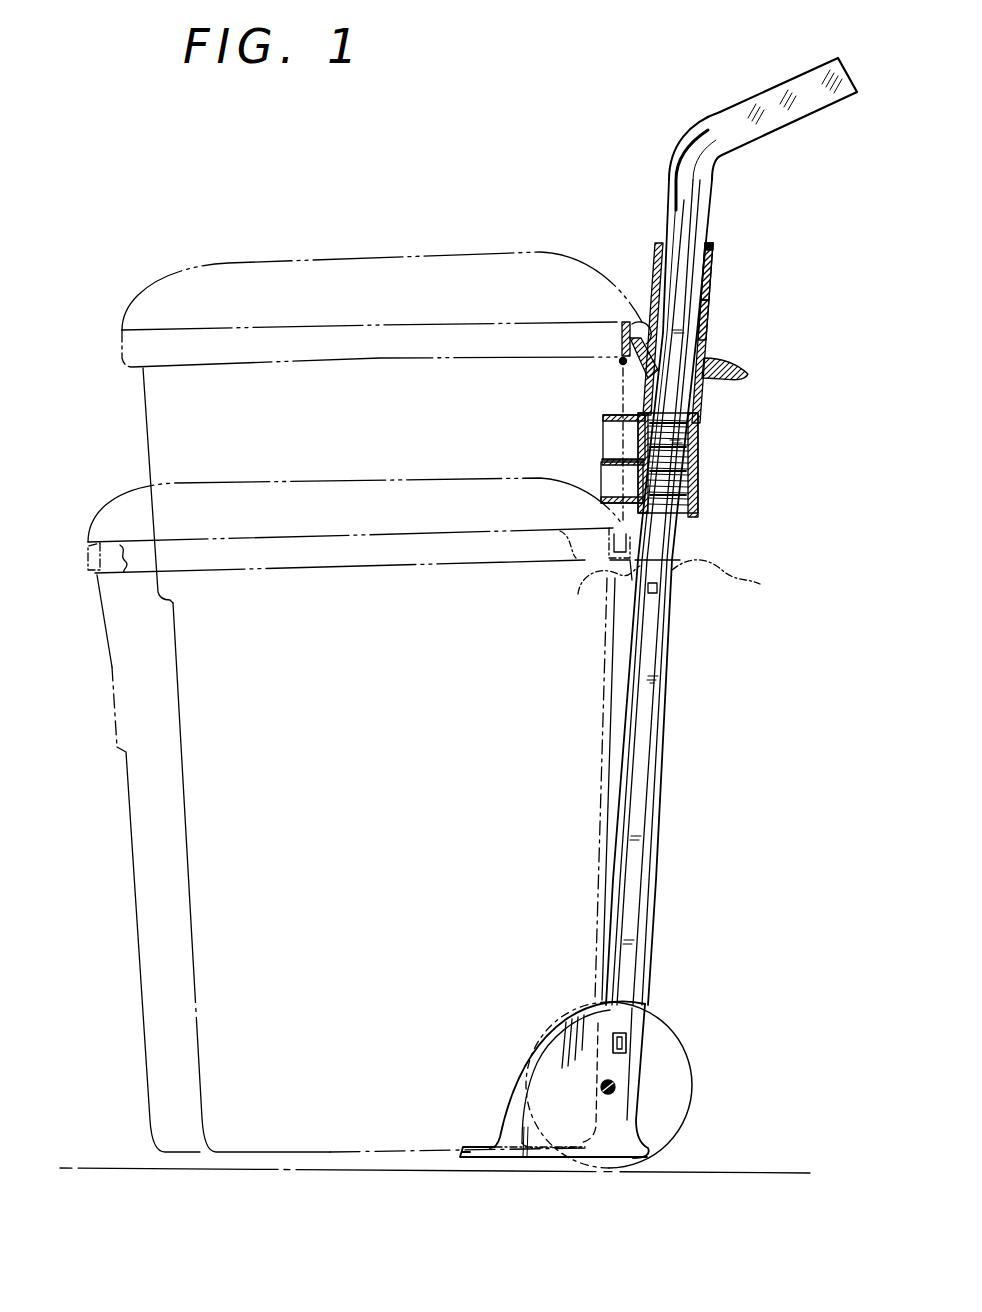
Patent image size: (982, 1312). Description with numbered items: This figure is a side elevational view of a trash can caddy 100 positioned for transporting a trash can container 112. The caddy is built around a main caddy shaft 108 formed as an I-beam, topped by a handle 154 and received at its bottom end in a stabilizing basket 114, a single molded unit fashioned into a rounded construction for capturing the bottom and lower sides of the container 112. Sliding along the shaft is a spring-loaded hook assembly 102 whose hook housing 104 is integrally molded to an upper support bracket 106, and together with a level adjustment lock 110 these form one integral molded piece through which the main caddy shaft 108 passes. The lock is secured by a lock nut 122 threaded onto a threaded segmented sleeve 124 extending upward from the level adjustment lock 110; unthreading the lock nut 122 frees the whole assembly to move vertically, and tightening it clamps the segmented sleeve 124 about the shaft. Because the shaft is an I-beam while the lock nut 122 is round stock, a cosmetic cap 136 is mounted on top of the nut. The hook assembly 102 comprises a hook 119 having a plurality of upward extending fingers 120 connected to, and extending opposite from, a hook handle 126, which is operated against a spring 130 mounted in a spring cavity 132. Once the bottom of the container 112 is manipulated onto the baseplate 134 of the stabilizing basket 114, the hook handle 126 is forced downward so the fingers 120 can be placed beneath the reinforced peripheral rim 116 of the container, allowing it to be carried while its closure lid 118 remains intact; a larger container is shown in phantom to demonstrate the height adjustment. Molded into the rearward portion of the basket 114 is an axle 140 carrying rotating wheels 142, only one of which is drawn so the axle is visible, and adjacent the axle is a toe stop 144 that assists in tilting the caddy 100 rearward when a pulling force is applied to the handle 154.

The trash can caddy 100 is at (605, 210).
The spring-loaded hook assembly 102 is at (712, 346).
The hook housing 104 is at (704, 402).
The upper support bracket 106 is at (600, 432).
The main caddy shaft 108 is at (656, 810).
The level adjustment lock 110 is at (714, 275).
The trash can container 112 is at (183, 802).
The stabilizing basket 114 is at (575, 1110).
The reinforced peripheral rim 116 is at (632, 320).
The closure lid 118 is at (272, 258).
The hook 119 is at (622, 361).
The fingers 120 is at (617, 321).
The lock nut 122 is at (707, 262).
The threaded segmented sleeve 124 is at (708, 296).
The hook handle 126 is at (740, 372).
The spring 130 is at (690, 468).
The spring cavity 132 is at (701, 434).
The baseplate 134 is at (468, 1148).
The cosmetic cap 136 is at (702, 240).
The axle 140 is at (614, 1082).
The rotating wheels 142 is at (650, 1020).
The toe stop 144 is at (645, 1125).
The handle 154 is at (736, 112).